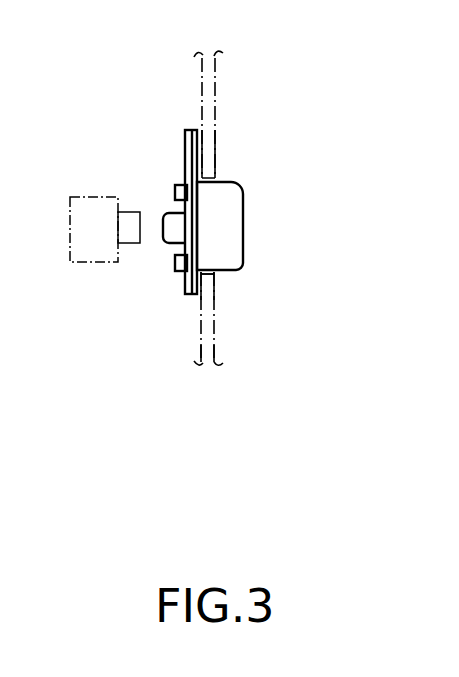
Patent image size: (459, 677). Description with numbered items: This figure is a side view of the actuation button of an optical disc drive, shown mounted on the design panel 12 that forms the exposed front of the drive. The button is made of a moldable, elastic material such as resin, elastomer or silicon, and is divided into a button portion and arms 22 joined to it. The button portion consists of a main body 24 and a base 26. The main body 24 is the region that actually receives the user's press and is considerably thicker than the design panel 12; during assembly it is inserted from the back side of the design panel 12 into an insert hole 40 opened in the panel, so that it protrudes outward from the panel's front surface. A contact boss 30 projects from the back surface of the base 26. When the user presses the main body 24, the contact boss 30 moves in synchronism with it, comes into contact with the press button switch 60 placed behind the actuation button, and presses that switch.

The design panel 12 is at (215, 90).
The arms 22 is at (185, 133).
The main body 24 is at (232, 225).
The base 26 is at (186, 292).
The contact boss 30 is at (168, 235).
The insert hole 40 is at (220, 275).
The press button switch 60 is at (82, 208).